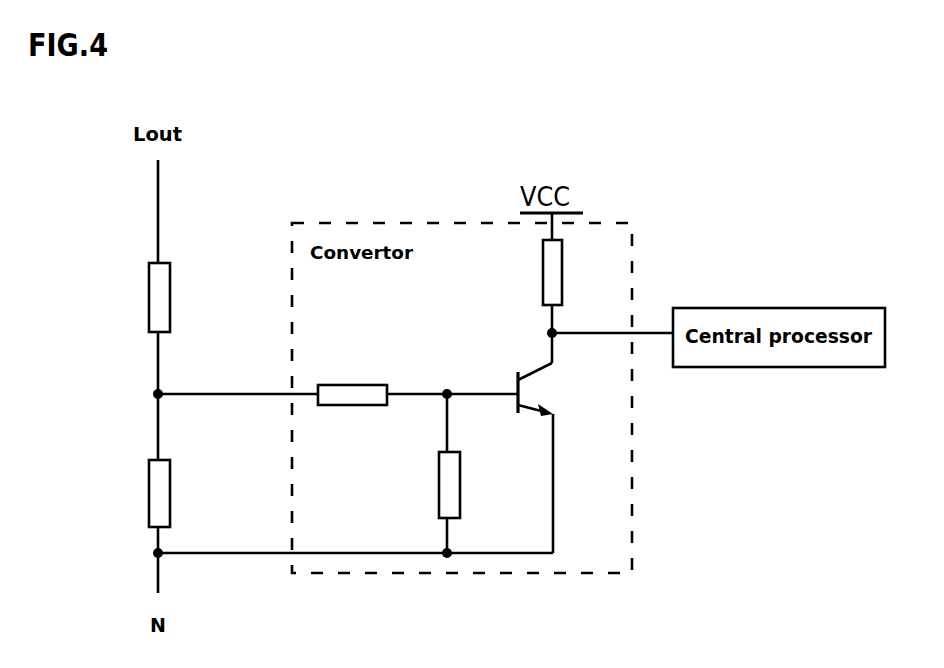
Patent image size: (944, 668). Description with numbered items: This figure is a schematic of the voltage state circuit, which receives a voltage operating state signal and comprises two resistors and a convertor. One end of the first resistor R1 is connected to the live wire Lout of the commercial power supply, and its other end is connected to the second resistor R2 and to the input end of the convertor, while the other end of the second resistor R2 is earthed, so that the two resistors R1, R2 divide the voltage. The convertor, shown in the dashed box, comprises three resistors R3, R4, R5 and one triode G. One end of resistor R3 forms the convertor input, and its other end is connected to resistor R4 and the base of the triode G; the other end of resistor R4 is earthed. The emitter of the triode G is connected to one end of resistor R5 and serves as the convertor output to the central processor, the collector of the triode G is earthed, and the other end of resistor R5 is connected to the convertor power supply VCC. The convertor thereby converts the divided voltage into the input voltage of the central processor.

The first resistor R1 is at (178, 297).
The second resistor R2 is at (178, 493).
The resistor R3 is at (352, 380).
The resistor R4 is at (470, 485).
The resistor R5 is at (571, 272).
The triode G is at (549, 389).